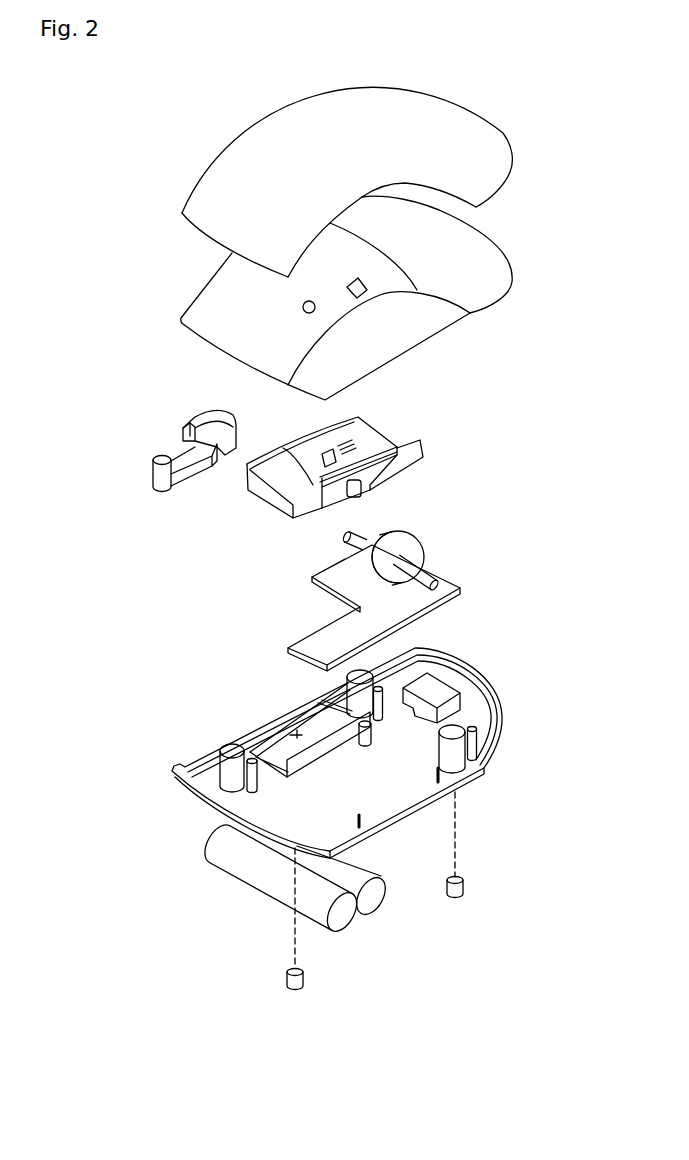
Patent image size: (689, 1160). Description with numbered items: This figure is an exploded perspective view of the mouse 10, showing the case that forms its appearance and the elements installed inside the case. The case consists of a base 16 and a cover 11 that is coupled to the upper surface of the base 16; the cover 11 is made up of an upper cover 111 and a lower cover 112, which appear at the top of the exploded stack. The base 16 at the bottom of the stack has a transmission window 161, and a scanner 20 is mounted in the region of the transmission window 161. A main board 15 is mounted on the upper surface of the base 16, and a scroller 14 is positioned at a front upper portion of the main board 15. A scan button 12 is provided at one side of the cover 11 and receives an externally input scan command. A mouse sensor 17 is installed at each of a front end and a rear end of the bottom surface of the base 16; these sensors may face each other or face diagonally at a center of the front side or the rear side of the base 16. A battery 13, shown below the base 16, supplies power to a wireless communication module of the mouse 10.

The mouse 10 is at (199, 133).
The cover 11 is at (407, 243).
The upper cover 111 is at (497, 171).
The lower cover 112 is at (392, 298).
The scan button 12 is at (193, 423).
The battery 13 is at (257, 872).
The scroller 14 is at (420, 547).
The main board 15 is at (460, 582).
The base 16 is at (497, 705).
The transmission window 161 is at (296, 735).
The mouse sensor 17 is at (303, 967).
The scanner 20 is at (424, 424).